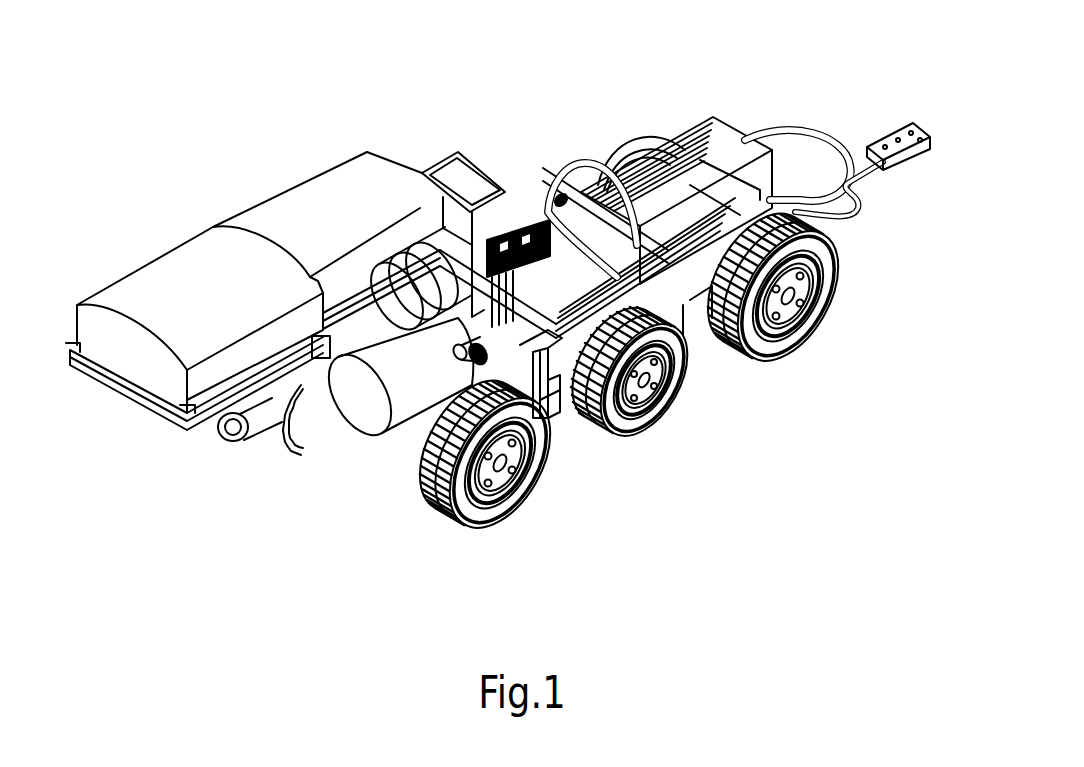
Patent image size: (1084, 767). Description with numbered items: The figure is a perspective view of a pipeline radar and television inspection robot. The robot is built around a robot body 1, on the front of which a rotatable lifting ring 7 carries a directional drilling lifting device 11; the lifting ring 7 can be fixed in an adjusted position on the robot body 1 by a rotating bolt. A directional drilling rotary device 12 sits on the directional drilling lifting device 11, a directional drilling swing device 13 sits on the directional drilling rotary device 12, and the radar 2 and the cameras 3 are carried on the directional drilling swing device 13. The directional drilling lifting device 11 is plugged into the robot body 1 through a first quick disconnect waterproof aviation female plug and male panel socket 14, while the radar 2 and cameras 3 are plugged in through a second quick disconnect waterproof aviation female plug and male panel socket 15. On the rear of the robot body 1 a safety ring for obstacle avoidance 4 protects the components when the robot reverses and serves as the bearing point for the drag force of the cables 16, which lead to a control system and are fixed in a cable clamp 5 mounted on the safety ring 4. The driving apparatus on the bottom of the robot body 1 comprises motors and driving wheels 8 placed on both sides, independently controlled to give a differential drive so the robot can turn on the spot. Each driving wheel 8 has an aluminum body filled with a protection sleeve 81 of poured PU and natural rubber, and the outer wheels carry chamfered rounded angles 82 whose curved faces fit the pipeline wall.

The robot body 1 is at (697, 330).
The radar 2 is at (163, 288).
The cameras 3 is at (228, 440).
The safety ring for obstacle avoidance 4 is at (857, 197).
The cable clamp 5 is at (910, 127).
The lifting ring 7 is at (780, 137).
The driving wheels 8 is at (547, 410).
The directional drilling lifting device 11 is at (585, 207).
The directional drilling rotary device 12 is at (476, 190).
The directional drilling swing device 13 is at (368, 323).
The first quick disconnect waterproof aviation female plug and male panel socket 14 is at (463, 367).
The second quick disconnect waterproof aviation female plug and male panel socket 15 is at (550, 420).
The cables 16 is at (833, 177).
The protection sleeve 81 is at (427, 497).
The rounded angles 82 is at (463, 527).